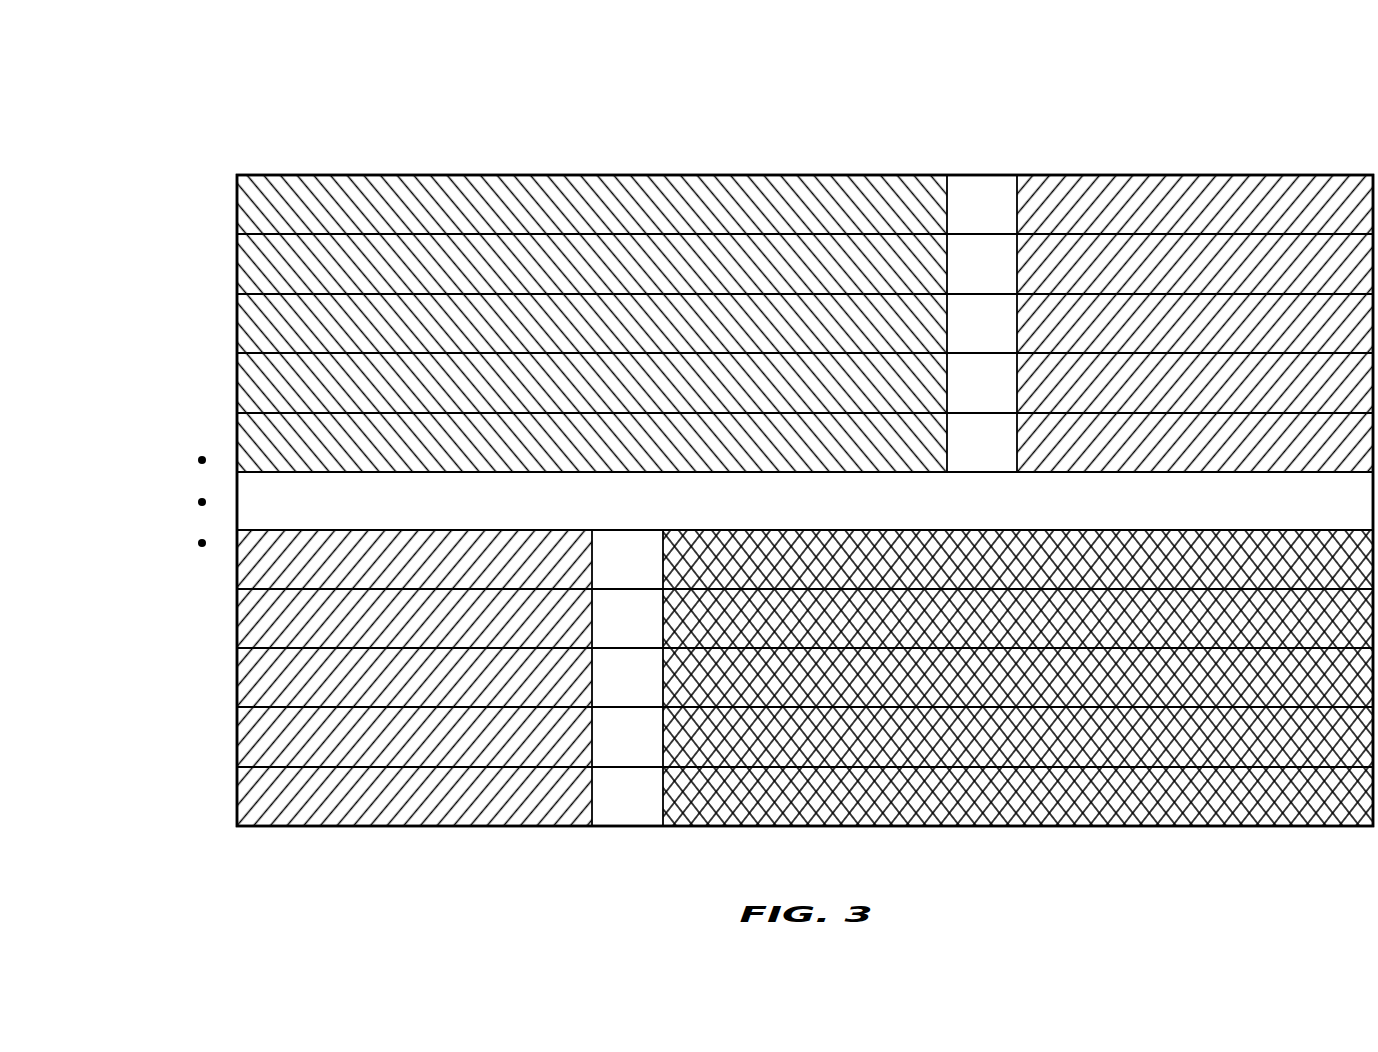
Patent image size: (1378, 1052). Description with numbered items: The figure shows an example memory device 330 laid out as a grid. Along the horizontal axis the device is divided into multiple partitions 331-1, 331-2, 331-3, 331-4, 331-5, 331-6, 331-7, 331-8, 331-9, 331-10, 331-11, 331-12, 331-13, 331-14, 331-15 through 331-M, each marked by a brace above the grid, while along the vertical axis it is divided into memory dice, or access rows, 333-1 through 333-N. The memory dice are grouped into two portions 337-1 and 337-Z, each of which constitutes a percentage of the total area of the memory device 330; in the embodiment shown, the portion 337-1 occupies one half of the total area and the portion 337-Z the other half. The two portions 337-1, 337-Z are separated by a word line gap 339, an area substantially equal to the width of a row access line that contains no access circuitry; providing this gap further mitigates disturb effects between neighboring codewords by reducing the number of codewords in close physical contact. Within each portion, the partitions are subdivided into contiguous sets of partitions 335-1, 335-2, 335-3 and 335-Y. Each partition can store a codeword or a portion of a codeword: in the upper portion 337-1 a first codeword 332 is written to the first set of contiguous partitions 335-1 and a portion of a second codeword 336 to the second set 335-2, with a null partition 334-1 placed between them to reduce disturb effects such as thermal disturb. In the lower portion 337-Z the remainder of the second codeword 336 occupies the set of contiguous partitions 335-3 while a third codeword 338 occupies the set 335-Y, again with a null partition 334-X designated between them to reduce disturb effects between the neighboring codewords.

The memory device 330 is at (210, 41).
The partition 331-1 is at (272, 467).
The partition 331-2 is at (343, 462).
The partition 331-3 is at (414, 467).
The partition 331-4 is at (485, 462).
The partition 331-5 is at (556, 467).
The partition 331-6 is at (627, 462).
The partition 331-7 is at (698, 467).
The partition 331-8 is at (769, 462).
The partition 331-9 is at (840, 467).
The partition 331-10 is at (911, 462).
The partition 331-11 is at (982, 467).
The partition 331-12 is at (1053, 462).
The partition 331-13 is at (1124, 467).
The partition 331-14 is at (1195, 462).
The partition 331-15 is at (1266, 467).
The partition 331-M is at (1337, 462).
The codeword 332 is at (588, 217).
The memory die 333-1 is at (763, 205).
The memory die 333-N is at (762, 796).
The null partition 334-1 is at (957, 217).
The null partition 334-X is at (601, 572).
The contiguous portion of partitions 335-1 is at (592, 106).
The contiguous portion of partitions 335-2 is at (1195, 106).
The contiguous portion of partitions 335-3 is at (415, 855).
The contiguous portion of partitions 335-Y is at (1018, 855).
The codeword 336 is at (1179, 217).
The portion of memory dice 337-1 is at (719, 323).
The portion of memory dice 337-Z is at (718, 677).
The codeword 338 is at (998, 572).
The word line gap 339 is at (1070, 514).